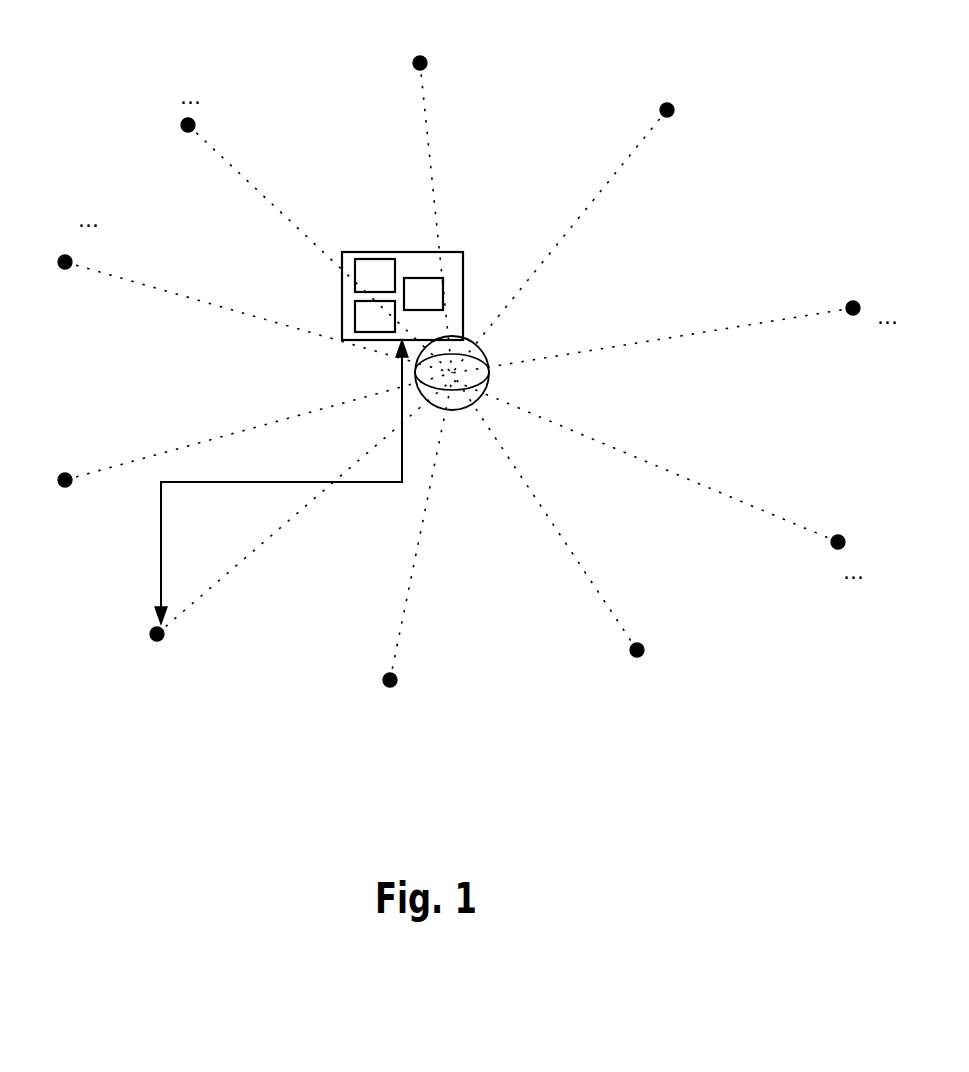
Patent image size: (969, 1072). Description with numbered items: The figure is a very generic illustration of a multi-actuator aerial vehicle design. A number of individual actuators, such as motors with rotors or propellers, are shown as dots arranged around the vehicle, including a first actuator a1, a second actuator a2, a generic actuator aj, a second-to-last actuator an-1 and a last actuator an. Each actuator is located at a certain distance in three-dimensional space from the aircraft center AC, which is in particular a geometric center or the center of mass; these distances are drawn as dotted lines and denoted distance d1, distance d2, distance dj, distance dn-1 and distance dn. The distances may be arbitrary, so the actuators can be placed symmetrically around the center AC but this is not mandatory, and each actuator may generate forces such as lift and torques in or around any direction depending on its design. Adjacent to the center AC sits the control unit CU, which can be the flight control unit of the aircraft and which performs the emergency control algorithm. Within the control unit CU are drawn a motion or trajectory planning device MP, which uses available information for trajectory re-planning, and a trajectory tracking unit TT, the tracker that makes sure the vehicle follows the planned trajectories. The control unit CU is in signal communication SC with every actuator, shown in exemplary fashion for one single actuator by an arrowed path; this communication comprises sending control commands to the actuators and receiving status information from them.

The control unit CU is at (342, 317).
The trajectory tracking unit TT is at (443, 296).
The motion or trajectory planning device MP is at (395, 315).
The aircraft center AC is at (496, 387).
The signal communication SC is at (355, 562).
The actuator a1 is at (405, 699).
The actuator a2 is at (649, 675).
The actuator aj is at (692, 101).
The actuator an-1 is at (49, 456).
The actuator an is at (128, 620).
The distance d1 is at (425, 530).
The distance d2 is at (544, 511).
The distance dj is at (559, 241).
The distance dn-1 is at (258, 426).
The distance dn is at (303, 487).